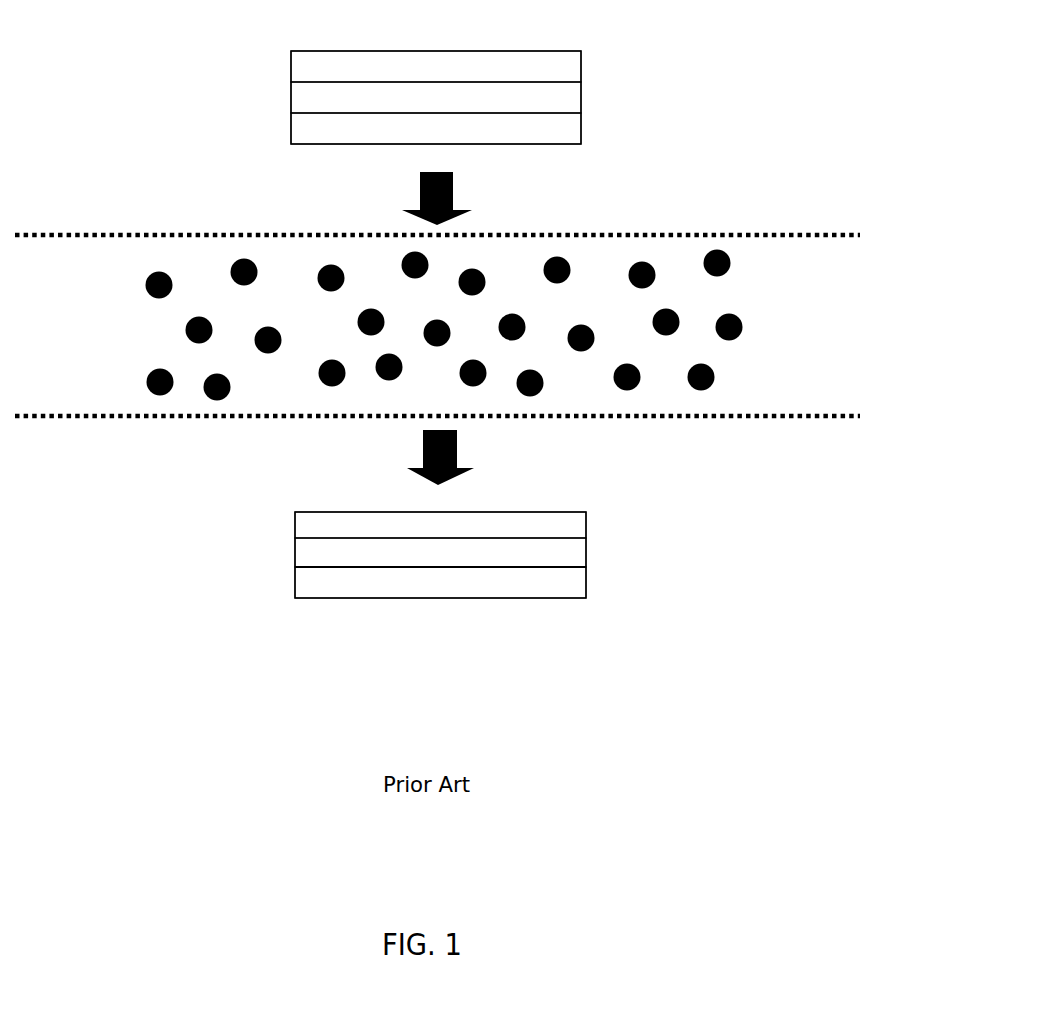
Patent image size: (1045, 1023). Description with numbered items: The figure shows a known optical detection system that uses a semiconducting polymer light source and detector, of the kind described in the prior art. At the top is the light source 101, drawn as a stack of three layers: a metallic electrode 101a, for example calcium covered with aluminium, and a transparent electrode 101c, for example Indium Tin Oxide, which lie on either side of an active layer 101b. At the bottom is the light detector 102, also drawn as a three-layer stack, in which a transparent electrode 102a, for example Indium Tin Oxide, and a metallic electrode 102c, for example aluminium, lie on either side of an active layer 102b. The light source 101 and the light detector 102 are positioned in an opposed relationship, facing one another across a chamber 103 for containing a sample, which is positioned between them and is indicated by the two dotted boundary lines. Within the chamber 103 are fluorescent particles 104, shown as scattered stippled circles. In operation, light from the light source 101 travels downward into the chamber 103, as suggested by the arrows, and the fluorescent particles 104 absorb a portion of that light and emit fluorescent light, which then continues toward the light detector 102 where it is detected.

The light source 101 is at (410, 113).
The metallic electrode 101a is at (303, 66).
The active layer 101b is at (316, 95).
The transparent electrode 101c is at (316, 131).
The light detector 102 is at (420, 575).
The transparent electrode 102a is at (307, 522).
The active layer 102b is at (319, 549).
The metallic electrode 102c is at (319, 585).
The chamber 103 is at (829, 295).
The fluorescent particles 104 is at (703, 380).